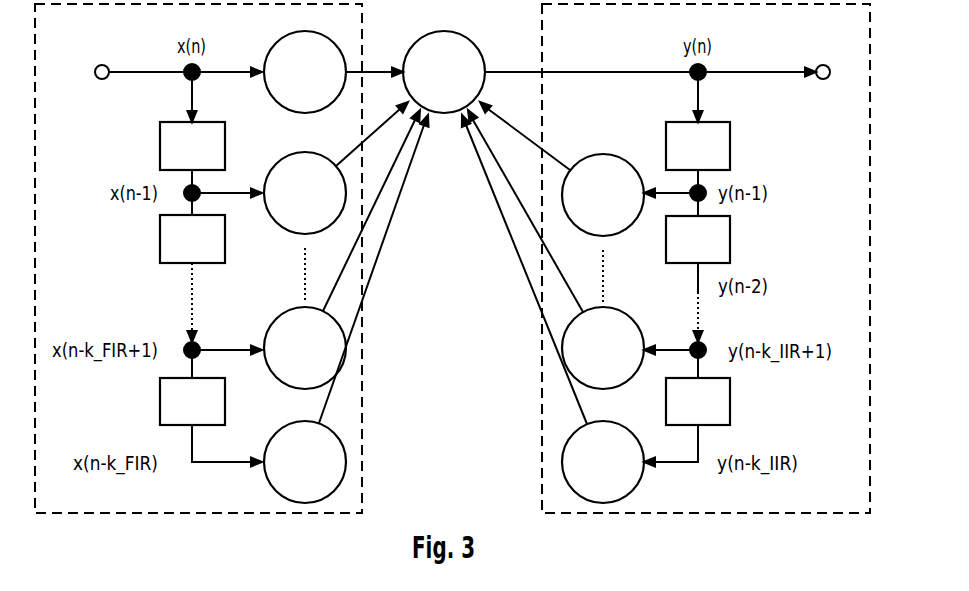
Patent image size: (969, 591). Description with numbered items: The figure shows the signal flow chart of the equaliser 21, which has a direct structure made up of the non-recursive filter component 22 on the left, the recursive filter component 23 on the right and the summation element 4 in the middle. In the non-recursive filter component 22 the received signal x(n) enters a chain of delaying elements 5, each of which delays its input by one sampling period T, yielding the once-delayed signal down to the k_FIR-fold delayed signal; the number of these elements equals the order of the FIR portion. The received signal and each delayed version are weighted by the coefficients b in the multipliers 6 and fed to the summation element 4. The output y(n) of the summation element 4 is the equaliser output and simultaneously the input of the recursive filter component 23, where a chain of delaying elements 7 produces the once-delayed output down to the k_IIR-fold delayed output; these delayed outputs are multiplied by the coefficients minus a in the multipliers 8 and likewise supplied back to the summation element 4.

The summation element 4 is at (428, 42).
The delaying elements of the non-recursive filter component 5 is at (163, 413).
The multipliers of the non-recursive filter component 6 is at (288, 442).
The delaying elements of the recursive filter component 7 is at (725, 157).
The multipliers of the recursive filter component 8 is at (617, 447).
The equaliser 21 is at (516, 460).
The non-recursive filter component 22 is at (208, 507).
The recursive filter component 23 is at (702, 507).